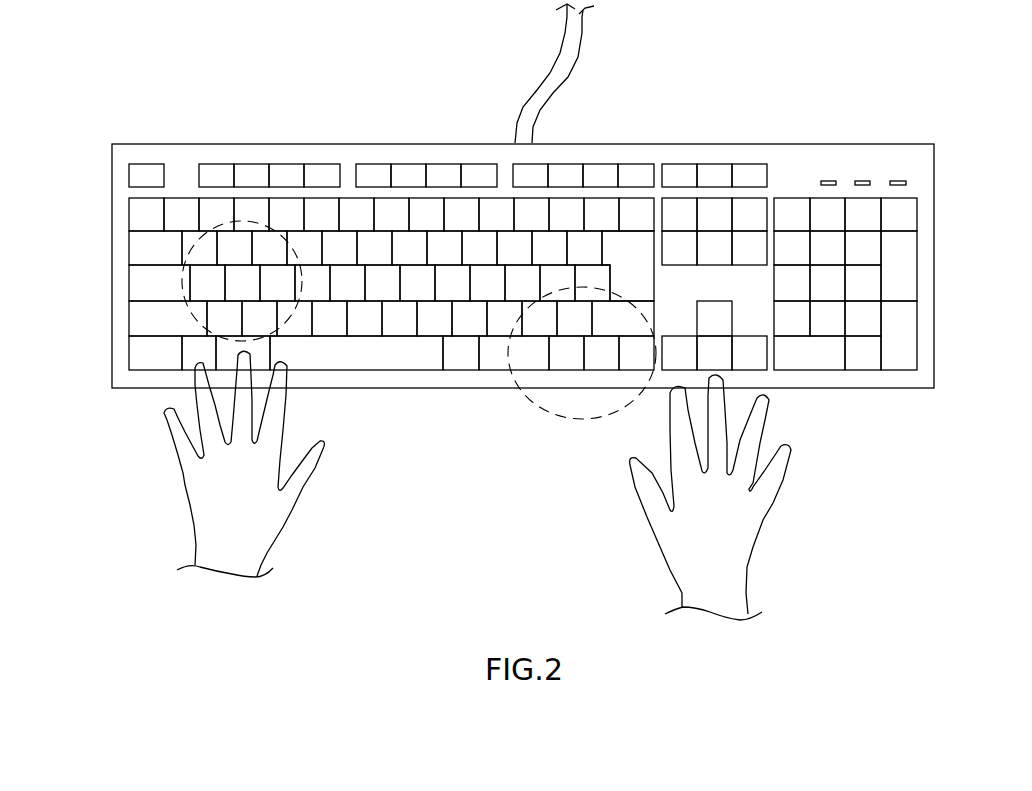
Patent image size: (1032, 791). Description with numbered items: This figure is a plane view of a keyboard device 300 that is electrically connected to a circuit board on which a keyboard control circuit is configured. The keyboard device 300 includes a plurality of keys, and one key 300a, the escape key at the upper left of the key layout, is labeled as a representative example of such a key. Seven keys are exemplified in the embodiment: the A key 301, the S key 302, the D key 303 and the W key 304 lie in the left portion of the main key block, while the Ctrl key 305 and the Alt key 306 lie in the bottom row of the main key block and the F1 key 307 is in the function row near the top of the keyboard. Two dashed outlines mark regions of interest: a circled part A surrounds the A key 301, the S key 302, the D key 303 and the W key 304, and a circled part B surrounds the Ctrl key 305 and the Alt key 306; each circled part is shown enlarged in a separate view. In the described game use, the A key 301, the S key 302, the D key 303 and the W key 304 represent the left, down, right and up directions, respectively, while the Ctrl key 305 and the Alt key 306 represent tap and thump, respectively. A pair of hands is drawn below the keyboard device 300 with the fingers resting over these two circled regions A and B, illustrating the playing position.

The keyboard device 300 is at (950, 155).
The key 300a is at (147, 172).
The A key 301 is at (198, 278).
The S key 302 is at (250, 292).
The D key 303 is at (285, 277).
The W key 304 is at (238, 243).
The Ctrl key 305 is at (640, 358).
The Alt key 306 is at (527, 348).
The F1 key 307 is at (217, 172).
The circled part A is at (200, 242).
The circled part B is at (532, 402).